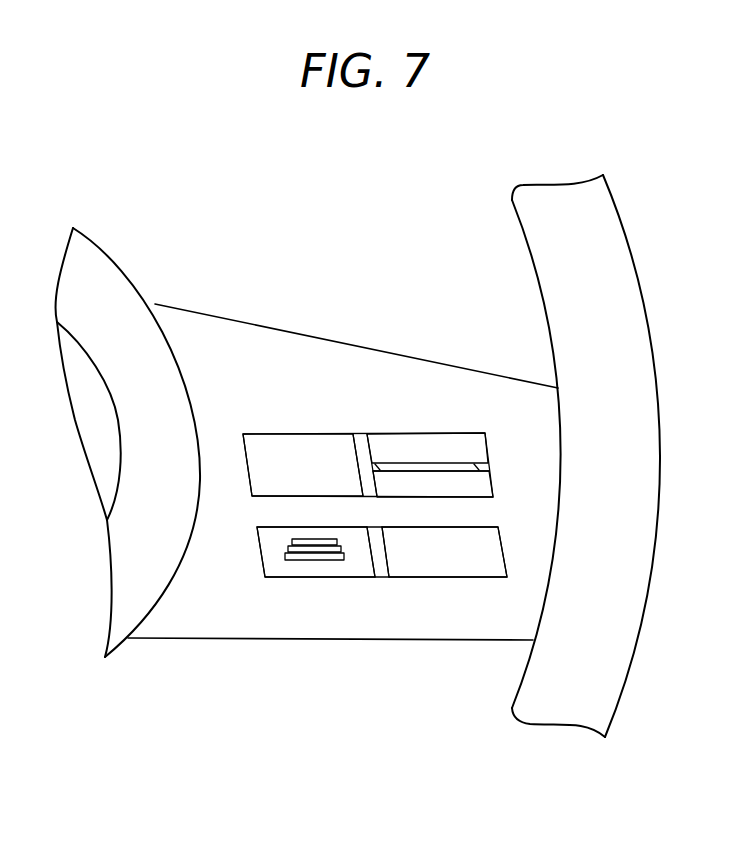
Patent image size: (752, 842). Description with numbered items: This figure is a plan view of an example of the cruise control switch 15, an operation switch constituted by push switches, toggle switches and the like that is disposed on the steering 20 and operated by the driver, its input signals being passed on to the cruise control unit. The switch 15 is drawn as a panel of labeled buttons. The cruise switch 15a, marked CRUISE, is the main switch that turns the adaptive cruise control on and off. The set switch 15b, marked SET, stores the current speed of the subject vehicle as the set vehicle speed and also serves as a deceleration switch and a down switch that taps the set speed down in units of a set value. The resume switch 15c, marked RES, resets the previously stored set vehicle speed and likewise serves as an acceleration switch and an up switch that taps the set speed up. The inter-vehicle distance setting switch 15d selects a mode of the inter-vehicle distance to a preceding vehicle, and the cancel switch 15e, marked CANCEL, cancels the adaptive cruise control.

The steering 20 is at (313, 238).
The cruise control switch 15 is at (363, 372).
The cruise switch 15a is at (301, 433).
The set switch 15b is at (492, 477).
The resume switch 15c is at (487, 438).
The inter-vehicle distance setting switch 15d is at (337, 580).
The cancel switch 15e is at (434, 580).